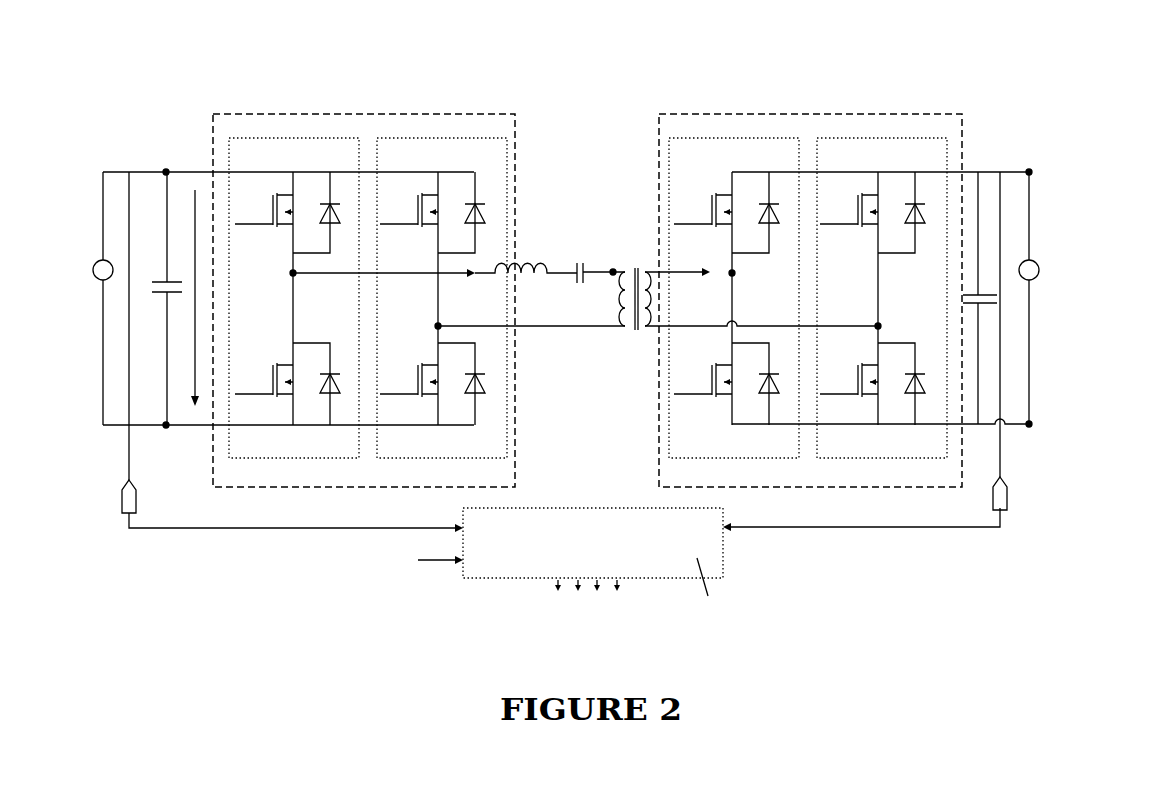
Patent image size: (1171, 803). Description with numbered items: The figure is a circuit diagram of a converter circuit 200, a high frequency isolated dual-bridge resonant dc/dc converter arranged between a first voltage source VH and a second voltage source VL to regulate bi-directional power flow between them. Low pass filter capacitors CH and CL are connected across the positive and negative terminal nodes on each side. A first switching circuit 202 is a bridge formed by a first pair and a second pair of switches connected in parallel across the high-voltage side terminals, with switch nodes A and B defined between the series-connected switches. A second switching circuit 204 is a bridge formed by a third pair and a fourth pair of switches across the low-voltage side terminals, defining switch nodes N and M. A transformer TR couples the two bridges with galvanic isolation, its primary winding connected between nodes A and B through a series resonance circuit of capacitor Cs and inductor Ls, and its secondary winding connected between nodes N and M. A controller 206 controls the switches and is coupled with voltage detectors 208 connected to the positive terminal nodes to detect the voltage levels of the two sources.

The converter circuit 200 is at (1000, 108).
The first switching circuit 202 is at (369, 126).
The second switching circuit 204 is at (815, 127).
The controller 206 is at (627, 570).
The voltage detectors 208 is at (125, 501).